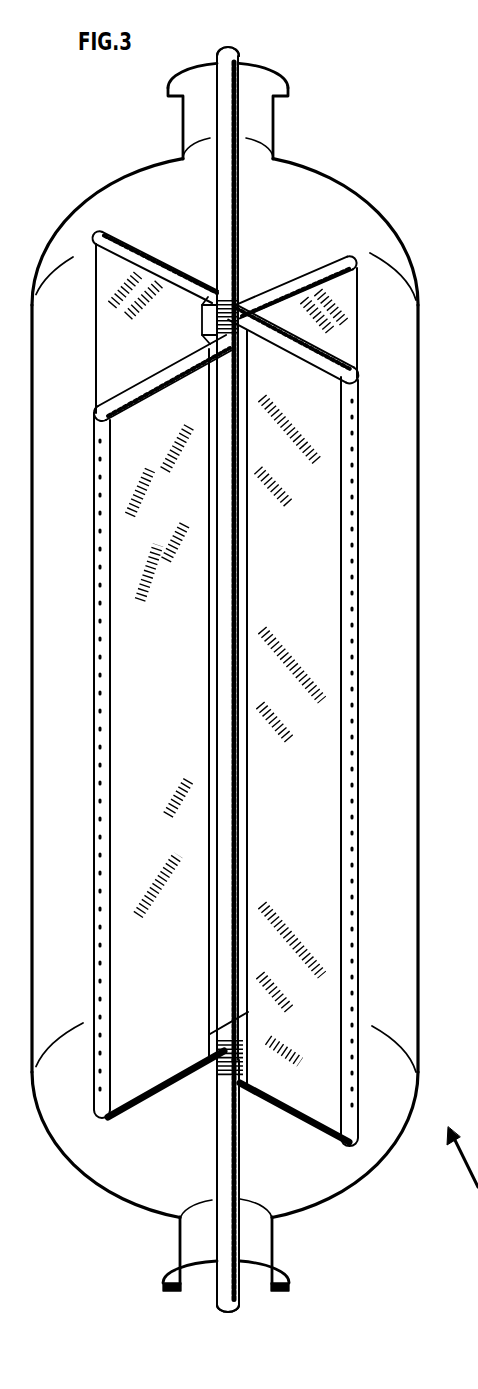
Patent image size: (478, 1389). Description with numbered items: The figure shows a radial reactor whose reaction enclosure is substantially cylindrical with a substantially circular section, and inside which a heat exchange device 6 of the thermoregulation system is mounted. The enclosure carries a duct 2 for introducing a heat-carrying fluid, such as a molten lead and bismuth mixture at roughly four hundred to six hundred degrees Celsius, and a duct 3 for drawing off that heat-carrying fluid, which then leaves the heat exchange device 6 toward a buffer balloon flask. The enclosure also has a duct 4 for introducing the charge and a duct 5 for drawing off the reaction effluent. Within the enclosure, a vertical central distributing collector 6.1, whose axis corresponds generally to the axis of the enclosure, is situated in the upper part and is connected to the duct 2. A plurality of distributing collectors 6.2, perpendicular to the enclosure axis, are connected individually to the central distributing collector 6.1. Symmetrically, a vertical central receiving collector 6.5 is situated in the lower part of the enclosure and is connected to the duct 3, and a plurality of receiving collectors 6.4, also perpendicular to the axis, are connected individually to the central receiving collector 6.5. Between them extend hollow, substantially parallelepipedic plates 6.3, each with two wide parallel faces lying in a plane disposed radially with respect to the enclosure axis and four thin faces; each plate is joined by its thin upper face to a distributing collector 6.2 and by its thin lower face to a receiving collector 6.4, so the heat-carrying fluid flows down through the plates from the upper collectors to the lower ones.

The duct for introducing a heat-carrying fluid 2 is at (239, 50).
The duct for drawing off the heat-carrying fluid 3 is at (238, 1305).
The duct for introducing a charge 4 is at (272, 1235).
The duct for drawing off the reaction effluent 5 is at (275, 113).
The heat exchange device 6 is at (285, 676).
The central distributing collector 6.1 is at (240, 197).
The distributing collectors 6.2 is at (155, 252).
The hollow plates 6.3 is at (308, 320).
The receiving collectors 6.4 is at (273, 1110).
The central receiving collector 6.5 is at (220, 1144).